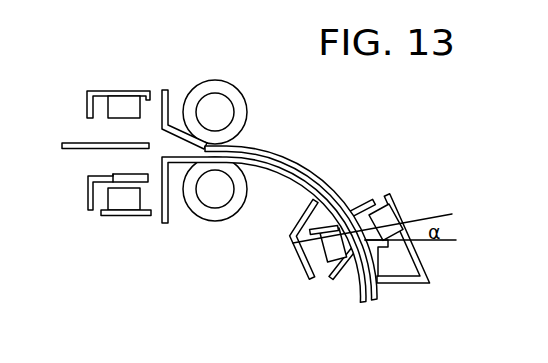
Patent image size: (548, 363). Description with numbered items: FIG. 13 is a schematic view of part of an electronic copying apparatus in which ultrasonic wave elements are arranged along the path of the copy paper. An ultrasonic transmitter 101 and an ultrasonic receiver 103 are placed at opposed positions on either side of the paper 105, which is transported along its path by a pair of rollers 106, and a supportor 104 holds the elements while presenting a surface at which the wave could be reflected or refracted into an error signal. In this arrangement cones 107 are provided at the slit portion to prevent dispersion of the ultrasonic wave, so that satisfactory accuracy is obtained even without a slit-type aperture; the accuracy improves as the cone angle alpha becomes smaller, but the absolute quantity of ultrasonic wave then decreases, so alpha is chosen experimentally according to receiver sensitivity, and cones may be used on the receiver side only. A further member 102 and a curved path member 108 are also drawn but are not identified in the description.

The ultrasonic transmitter 101 is at (127, 103).
The bracket 102 is at (122, 175).
The ultrasonic receiver 103 is at (125, 199).
The supportor 104 is at (305, 210).
The paper 105 is at (63, 143).
The roller 106 is at (212, 101).
The cones 107 is at (363, 204).
The belt 108 is at (262, 146).